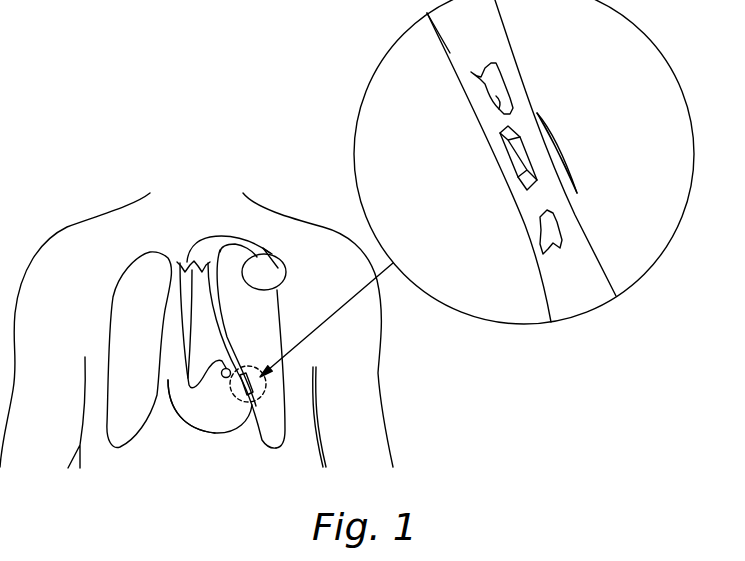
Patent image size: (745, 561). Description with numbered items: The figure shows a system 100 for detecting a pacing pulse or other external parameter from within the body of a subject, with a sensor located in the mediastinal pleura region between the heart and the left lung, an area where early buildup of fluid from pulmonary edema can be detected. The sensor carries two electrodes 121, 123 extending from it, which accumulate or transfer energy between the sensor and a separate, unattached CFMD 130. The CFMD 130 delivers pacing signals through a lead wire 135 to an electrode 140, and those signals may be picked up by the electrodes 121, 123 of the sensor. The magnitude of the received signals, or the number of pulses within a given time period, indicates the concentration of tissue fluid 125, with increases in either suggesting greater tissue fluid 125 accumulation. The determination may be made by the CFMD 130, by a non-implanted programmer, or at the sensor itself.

The system 100 is at (122, 92).
The electrode 121 is at (505, 82).
The electrode 123 is at (530, 248).
The tissue fluid 125 is at (563, 143).
The CFMD 130 is at (288, 270).
The lead wire 135 is at (219, 236).
The electrode 140 is at (226, 378).